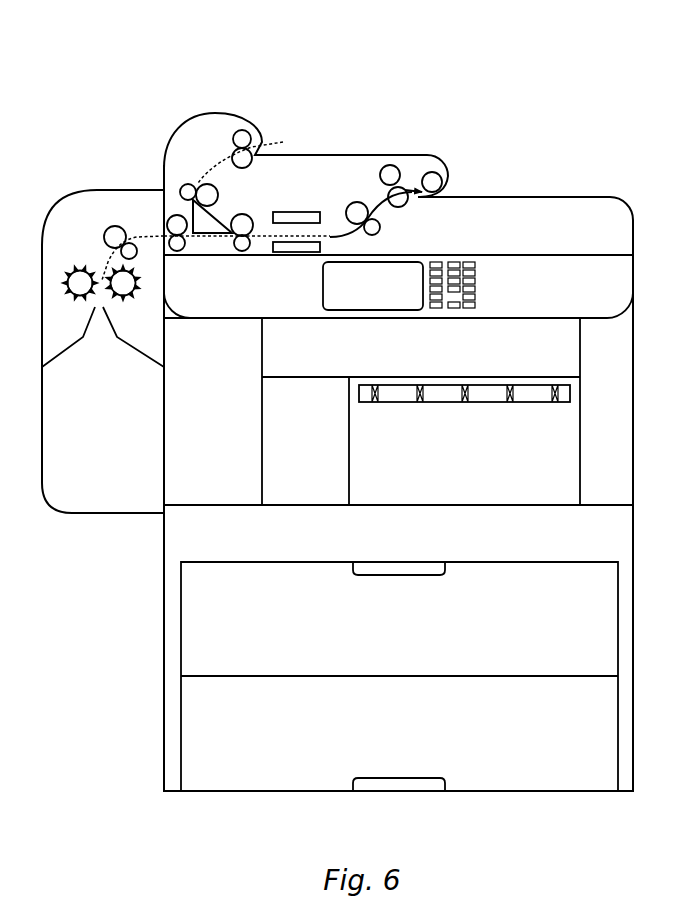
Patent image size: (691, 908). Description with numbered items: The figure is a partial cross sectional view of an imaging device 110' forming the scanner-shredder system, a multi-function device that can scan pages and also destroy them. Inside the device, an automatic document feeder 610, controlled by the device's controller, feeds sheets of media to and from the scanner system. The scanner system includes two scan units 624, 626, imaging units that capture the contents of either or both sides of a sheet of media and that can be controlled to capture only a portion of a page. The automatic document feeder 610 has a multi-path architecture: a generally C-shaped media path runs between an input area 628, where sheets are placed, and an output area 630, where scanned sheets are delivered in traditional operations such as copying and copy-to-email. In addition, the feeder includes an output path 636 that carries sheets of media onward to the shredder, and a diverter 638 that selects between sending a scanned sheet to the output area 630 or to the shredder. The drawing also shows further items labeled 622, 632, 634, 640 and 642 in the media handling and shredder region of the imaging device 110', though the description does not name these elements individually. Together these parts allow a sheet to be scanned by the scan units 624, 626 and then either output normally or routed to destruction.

The imaging device 110' is at (411, 409).
The automatic document feeder 610 is at (299, 186).
The media input path 622 is at (272, 142).
The scan unit 624 is at (282, 210).
The scan unit 626 is at (328, 237).
The input area 628 is at (538, 195).
The output area 630 is at (402, 153).
The feed rollers 632 is at (353, 196).
The output rollers 634 is at (458, 194).
The output path 636 is at (152, 235).
The diverter 638 is at (188, 210).
The shredder cutters 640 is at (80, 257).
The shredder bin 642 is at (103, 351).